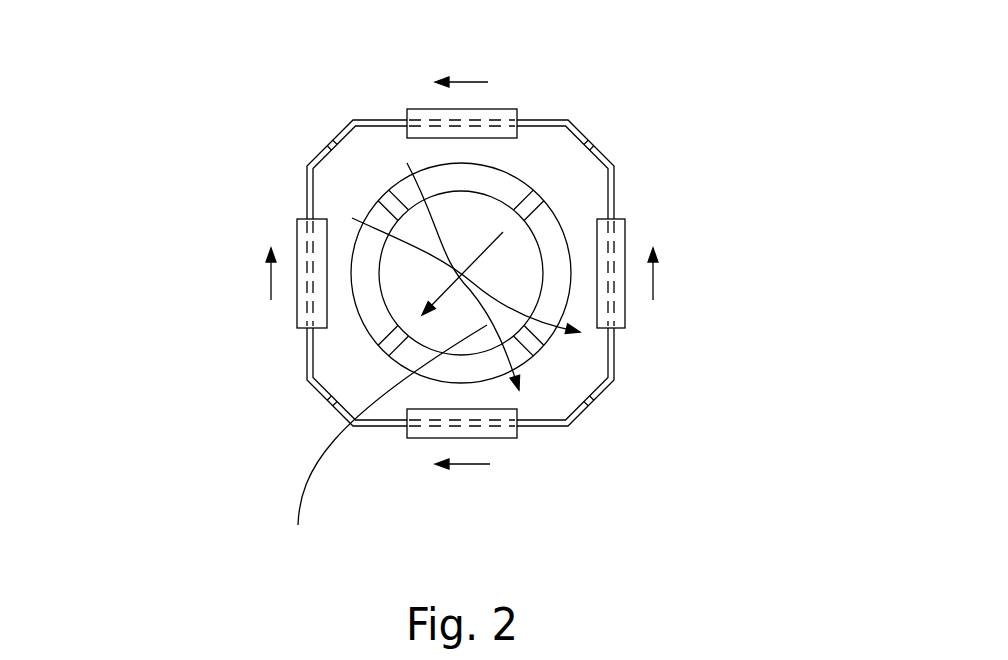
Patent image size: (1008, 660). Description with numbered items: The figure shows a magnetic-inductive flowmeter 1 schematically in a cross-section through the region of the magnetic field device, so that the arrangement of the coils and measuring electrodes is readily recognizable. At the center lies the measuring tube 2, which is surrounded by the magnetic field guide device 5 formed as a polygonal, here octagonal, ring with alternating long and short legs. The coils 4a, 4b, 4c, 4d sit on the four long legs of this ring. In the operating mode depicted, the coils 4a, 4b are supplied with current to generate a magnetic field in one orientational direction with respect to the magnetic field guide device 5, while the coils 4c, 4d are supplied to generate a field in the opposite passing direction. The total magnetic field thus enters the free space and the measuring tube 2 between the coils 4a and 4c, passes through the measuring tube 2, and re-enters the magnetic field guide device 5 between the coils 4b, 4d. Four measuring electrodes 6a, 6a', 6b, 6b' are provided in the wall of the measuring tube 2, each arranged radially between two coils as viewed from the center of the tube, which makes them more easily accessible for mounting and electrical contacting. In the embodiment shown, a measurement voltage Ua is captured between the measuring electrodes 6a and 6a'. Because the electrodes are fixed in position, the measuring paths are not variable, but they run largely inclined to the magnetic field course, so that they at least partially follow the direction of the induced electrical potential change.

The magnetic-inductive flowmeter 1 is at (142, 90).
The measuring tube 2 is at (515, 192).
The coil 4a is at (518, 109).
The coil 4b is at (627, 238).
The coil 4c is at (297, 233).
The coil 4d is at (505, 438).
The magnetic field guide device 5 is at (583, 123).
The measuring electrode 6a is at (686, 171).
The measuring electrode 6a' is at (234, 374).
The measuring electrode 6b is at (316, 118).
The measuring electrode 6b' is at (634, 444).
The measurement voltage Ua is at (500, 240).